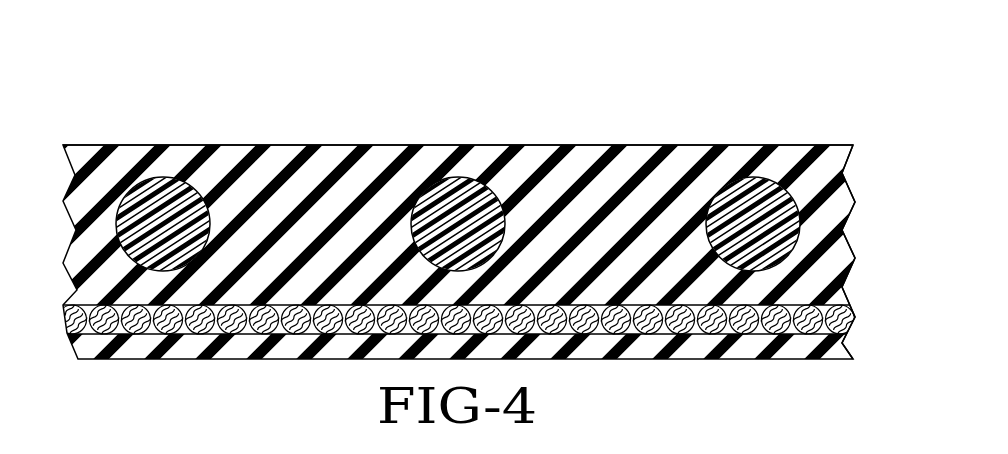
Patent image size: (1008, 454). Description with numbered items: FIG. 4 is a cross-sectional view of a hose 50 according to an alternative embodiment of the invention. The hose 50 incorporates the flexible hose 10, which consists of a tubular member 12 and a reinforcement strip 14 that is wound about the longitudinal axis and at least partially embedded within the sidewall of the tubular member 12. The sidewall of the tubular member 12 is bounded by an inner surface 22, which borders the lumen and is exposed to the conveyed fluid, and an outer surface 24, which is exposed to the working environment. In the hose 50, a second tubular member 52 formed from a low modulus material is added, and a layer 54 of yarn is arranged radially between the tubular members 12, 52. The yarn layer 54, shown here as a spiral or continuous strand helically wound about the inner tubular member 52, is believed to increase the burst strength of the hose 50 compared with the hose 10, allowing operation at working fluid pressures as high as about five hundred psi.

The flexible hose 10 is at (855, 190).
The tubular member 12 is at (282, 160).
The reinforcement strip 14 is at (456, 192).
The inner surface 22 is at (748, 318).
The outer surface 24 is at (648, 145).
The hose 50 is at (92, 115).
The tubular member 52 is at (182, 361).
The layer of yarn 54 is at (300, 326).